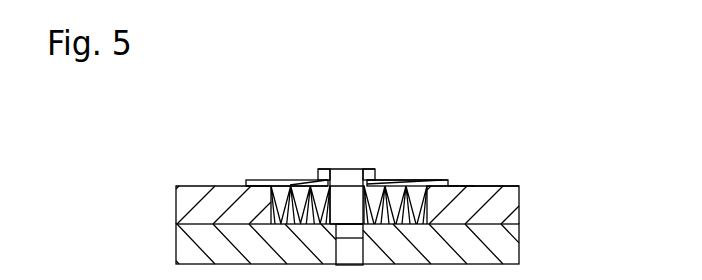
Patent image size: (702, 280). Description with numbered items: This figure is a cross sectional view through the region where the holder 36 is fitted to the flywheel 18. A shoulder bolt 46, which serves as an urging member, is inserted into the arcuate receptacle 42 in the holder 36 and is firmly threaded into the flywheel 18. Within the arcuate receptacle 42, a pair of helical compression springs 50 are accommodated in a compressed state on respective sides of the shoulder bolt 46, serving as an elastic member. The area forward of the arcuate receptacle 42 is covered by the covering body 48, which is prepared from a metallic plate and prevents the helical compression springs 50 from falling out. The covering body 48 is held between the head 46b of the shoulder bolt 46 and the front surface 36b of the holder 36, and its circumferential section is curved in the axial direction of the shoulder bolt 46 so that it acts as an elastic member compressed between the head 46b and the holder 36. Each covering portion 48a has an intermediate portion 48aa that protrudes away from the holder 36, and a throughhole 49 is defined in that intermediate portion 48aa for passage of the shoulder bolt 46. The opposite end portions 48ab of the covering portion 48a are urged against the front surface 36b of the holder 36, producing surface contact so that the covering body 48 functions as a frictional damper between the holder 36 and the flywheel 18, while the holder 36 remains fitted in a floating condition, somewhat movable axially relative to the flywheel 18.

The flywheel 18 is at (512, 248).
The holder 36 is at (512, 210).
The front surface of the holder 36b is at (503, 186).
The arcuate receptacle 42 is at (457, 185).
The shoulder bolt 46 is at (364, 167).
The head of the shoulder bolt 46b is at (378, 178).
The throughhole 49 is at (333, 169).
The covering body 48 is at (302, 180).
The covering portion 48a is at (450, 173).
The intermediate portion of the covering portion 48aa is at (437, 180).
The end portions of the covering portion 48ab is at (263, 181).
The helical compression spring 50 is at (290, 182).